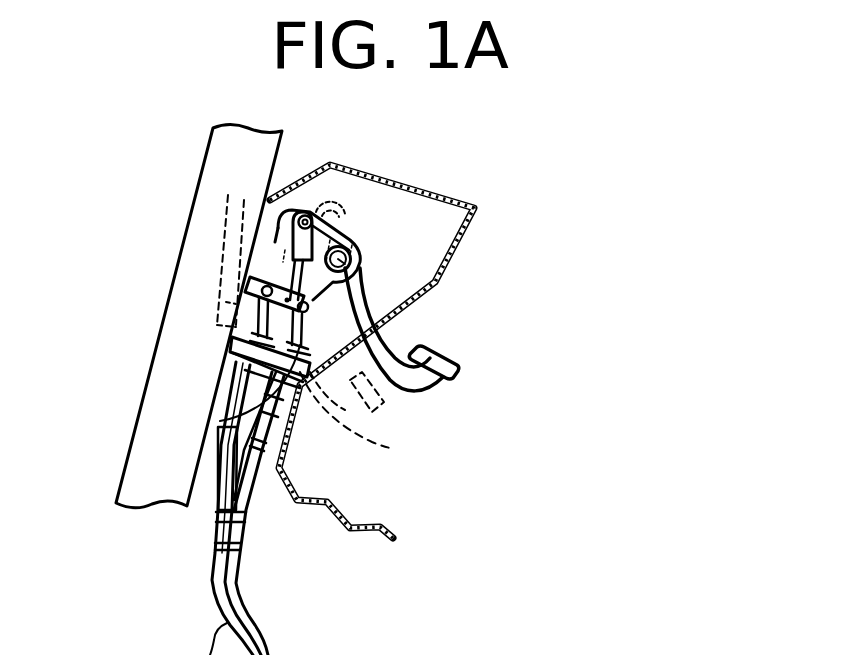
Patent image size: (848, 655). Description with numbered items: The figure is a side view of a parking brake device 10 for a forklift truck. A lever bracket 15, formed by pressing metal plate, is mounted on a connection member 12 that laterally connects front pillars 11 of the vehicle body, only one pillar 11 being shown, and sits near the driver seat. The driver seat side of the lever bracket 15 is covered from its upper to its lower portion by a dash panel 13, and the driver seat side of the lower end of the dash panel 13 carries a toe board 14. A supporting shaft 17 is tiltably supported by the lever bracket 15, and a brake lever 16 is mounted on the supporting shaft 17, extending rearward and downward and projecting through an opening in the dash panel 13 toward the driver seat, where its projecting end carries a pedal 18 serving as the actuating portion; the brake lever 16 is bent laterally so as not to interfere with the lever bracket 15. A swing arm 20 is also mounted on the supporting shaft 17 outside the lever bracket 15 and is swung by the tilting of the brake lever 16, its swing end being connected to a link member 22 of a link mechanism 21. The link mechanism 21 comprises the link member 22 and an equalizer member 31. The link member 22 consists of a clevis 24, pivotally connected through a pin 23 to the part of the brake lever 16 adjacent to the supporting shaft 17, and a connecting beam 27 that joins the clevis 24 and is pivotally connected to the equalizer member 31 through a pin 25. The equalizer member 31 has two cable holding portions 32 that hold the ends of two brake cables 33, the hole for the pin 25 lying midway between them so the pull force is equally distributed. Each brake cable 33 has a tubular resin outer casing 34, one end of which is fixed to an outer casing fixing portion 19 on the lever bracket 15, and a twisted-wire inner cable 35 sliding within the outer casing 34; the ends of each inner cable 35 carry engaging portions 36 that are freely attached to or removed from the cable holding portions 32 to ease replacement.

The parking brake device 10 is at (560, 147).
The front pillar 11 is at (134, 442).
The connection member 12 is at (262, 210).
The dash panel 13 is at (447, 192).
The toe board 14 is at (344, 509).
The lever bracket 15 is at (289, 242).
The brake lever 16 is at (412, 397).
The supporting shaft 17 is at (352, 265).
The pedal 18 is at (443, 362).
The outer casing fixing portion 19 is at (222, 418).
The swing arm 20 is at (350, 225).
The link mechanism 21 is at (76, 222).
The link member 22 is at (127, 193).
The pin 23 is at (305, 215).
The clevis 24 is at (282, 241).
The pin 25 is at (258, 318).
The connecting beam 27 is at (290, 268).
The equalizer member 31 is at (259, 291).
The cable holding portion 32 is at (262, 291).
The brake cable 33 is at (210, 598).
The outer casing 34 is at (258, 641).
The inner cable 35 is at (258, 320).
The engaging portion 36 is at (262, 309).